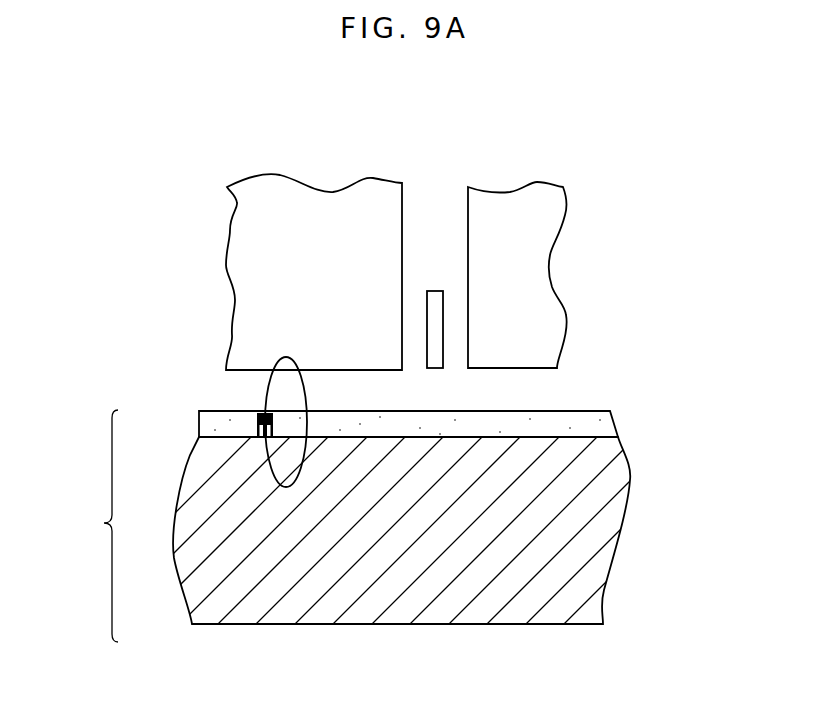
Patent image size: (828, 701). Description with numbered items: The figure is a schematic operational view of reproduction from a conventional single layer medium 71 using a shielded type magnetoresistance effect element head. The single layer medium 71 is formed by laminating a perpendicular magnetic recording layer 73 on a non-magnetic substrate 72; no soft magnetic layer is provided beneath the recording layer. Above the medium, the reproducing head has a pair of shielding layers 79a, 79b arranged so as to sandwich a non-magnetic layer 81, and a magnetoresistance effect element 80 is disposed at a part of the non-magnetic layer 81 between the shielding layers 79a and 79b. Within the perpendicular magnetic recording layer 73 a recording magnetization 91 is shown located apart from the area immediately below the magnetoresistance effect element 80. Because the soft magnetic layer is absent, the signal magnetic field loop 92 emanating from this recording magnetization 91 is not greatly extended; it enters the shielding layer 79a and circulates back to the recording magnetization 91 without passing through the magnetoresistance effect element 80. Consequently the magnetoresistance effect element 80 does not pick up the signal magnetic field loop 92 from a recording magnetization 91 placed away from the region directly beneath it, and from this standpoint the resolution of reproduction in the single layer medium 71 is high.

The single layer medium 71 is at (89, 526).
The non-magnetic substrate 72 is at (200, 520).
The perpendicular magnetic recording layer 73 is at (218, 428).
The shielding layer 79a is at (250, 227).
The shielding layer 79b is at (548, 207).
The magnetoresistance effect element 80 is at (436, 333).
The non-magnetic layer 81 is at (442, 250).
The recording magnetization 91 is at (256, 412).
The signal magnetic field loop 92 is at (308, 395).